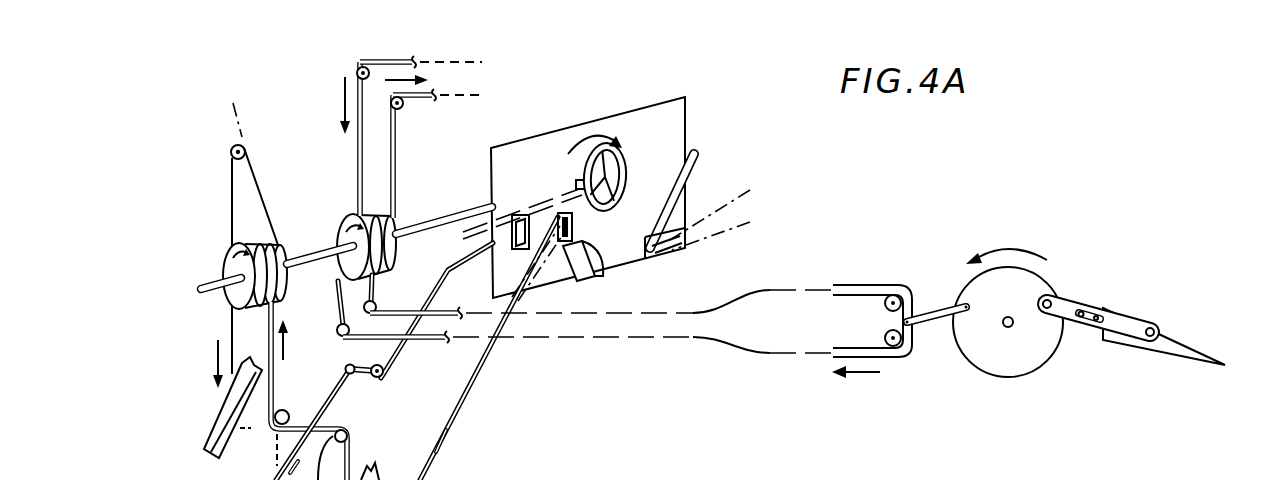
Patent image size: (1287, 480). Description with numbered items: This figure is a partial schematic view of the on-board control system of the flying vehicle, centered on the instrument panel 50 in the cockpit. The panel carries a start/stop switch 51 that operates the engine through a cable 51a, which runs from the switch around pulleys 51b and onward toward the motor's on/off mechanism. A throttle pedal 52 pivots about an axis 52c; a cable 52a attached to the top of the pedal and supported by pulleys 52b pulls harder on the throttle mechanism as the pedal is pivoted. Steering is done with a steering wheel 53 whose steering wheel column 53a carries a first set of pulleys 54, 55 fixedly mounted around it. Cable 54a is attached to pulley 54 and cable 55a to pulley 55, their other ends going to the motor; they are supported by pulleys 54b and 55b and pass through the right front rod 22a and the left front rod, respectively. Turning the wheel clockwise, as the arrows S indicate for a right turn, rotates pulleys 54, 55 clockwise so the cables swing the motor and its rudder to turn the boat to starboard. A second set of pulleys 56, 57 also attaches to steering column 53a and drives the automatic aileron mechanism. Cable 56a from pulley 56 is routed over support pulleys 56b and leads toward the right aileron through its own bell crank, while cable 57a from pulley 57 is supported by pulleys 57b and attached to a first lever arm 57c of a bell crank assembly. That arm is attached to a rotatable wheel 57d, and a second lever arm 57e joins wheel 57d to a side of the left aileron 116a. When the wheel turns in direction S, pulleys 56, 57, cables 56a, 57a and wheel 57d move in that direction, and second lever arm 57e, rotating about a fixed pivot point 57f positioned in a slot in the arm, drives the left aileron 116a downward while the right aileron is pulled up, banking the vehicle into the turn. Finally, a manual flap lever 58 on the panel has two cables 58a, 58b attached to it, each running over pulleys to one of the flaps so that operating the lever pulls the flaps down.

The right front rod 22a is at (222, 413).
The instrument panel 50 is at (686, 117).
The start/stop switch 51 is at (494, 263).
The cable 51a is at (378, 377).
The pulleys 51b is at (349, 374).
The throttle pedal 52 is at (590, 262).
The cable 52a is at (468, 392).
The pulleys 52b is at (574, 229).
The axis 52c is at (571, 279).
The steering wheel 53 is at (619, 164).
The steering wheel column 53a is at (205, 287).
The pulley 54 is at (283, 241).
The cable 54a is at (230, 326).
The pulley 54b is at (231, 150).
The pulley 55 is at (227, 264).
The cable 55a is at (272, 379).
The pulley 55b is at (267, 466).
The pulley 56 is at (368, 213).
The cable 56a is at (356, 148).
The aileron cable pulley 56b is at (354, 72).
The pulley 57 is at (337, 233).
The cable 57a is at (570, 339).
The pulleys 57b is at (342, 323).
The first lever arm 57c is at (940, 322).
The rotatable wheel 57d is at (1017, 360).
The second lever arm 57e is at (1096, 312).
The fixed pivot point 57f is at (1080, 330).
The lever 58 is at (702, 166).
The cable 58a is at (684, 206).
The cable 58b is at (683, 253).
The left aileron 116a is at (1185, 325).